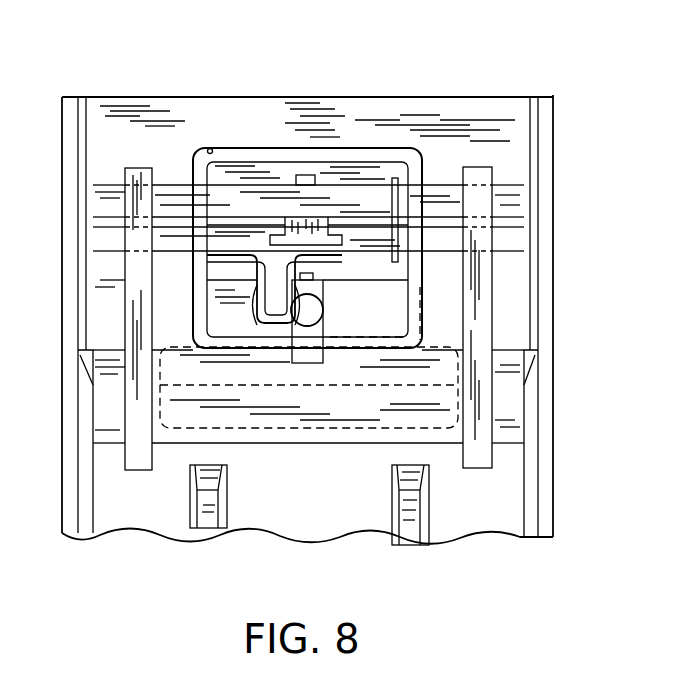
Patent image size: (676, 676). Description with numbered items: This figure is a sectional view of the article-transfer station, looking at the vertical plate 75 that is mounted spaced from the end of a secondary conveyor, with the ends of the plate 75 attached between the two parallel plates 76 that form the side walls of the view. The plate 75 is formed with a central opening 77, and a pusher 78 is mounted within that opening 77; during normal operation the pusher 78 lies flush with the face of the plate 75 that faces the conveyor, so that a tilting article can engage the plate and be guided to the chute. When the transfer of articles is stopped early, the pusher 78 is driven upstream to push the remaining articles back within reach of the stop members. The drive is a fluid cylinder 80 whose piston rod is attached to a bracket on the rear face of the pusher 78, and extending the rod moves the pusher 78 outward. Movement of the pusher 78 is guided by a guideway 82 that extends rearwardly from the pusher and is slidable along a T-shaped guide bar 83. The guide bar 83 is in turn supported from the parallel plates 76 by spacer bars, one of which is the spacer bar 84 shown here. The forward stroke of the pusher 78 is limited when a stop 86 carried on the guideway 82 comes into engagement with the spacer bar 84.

The vertical plate 75 is at (347, 105).
The parallel plates 76 is at (62, 128).
The central opening 77 is at (209, 148).
The pusher 78 is at (258, 164).
The fluid cylinder 80 is at (278, 322).
The guideway 82 is at (360, 220).
The T-shaped guide bar 83 is at (338, 244).
The spacer bar 84 is at (115, 190).
The stop 86 is at (400, 200).